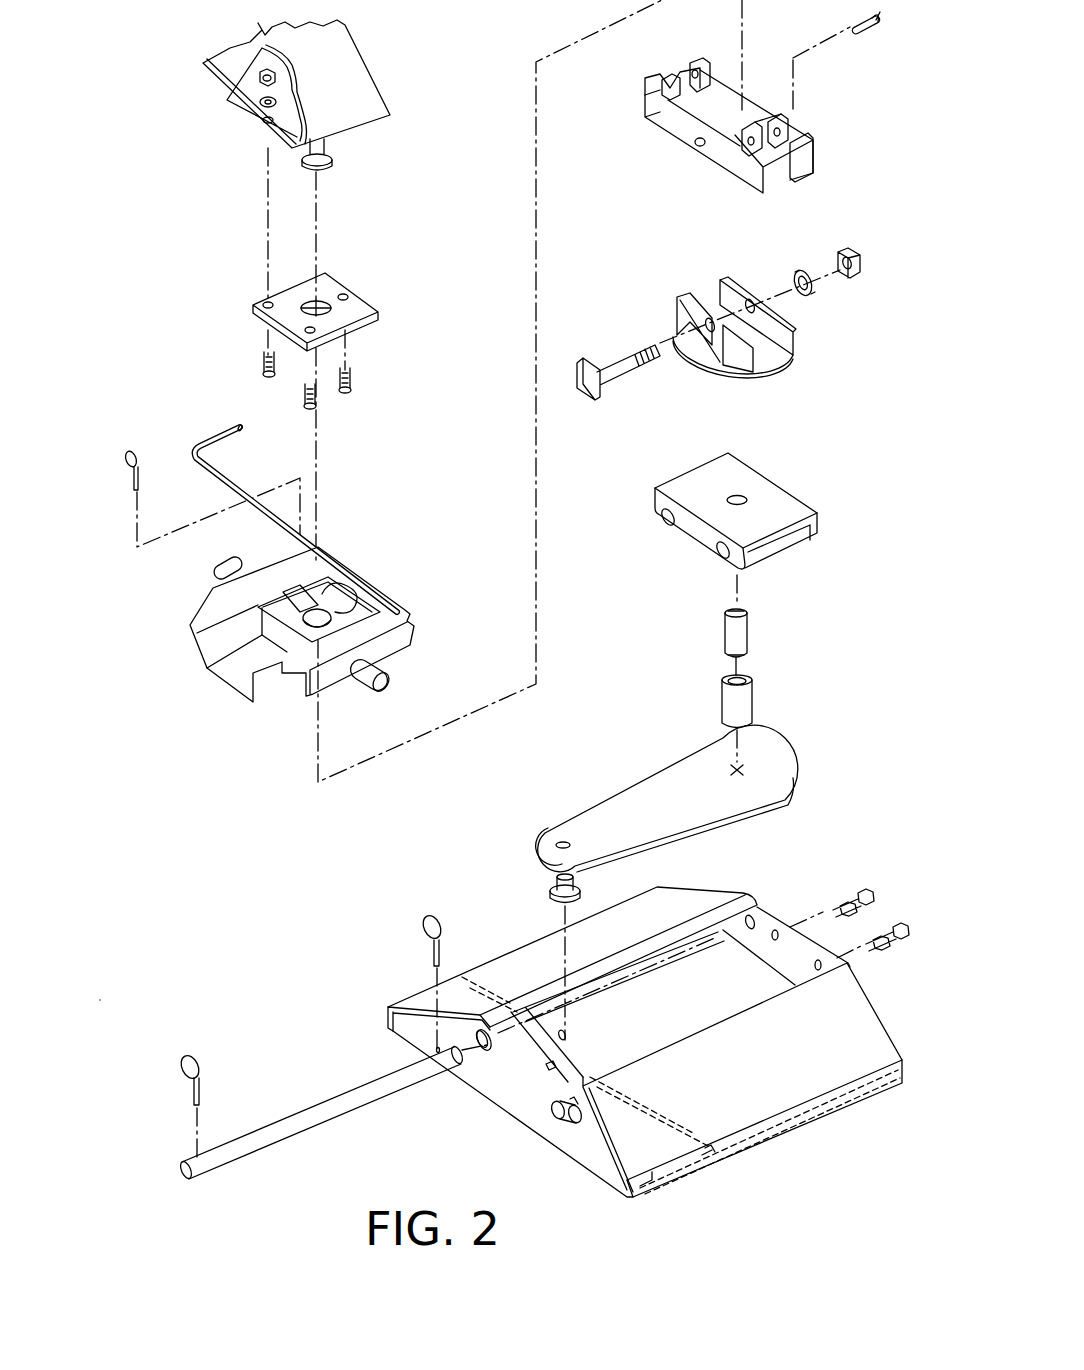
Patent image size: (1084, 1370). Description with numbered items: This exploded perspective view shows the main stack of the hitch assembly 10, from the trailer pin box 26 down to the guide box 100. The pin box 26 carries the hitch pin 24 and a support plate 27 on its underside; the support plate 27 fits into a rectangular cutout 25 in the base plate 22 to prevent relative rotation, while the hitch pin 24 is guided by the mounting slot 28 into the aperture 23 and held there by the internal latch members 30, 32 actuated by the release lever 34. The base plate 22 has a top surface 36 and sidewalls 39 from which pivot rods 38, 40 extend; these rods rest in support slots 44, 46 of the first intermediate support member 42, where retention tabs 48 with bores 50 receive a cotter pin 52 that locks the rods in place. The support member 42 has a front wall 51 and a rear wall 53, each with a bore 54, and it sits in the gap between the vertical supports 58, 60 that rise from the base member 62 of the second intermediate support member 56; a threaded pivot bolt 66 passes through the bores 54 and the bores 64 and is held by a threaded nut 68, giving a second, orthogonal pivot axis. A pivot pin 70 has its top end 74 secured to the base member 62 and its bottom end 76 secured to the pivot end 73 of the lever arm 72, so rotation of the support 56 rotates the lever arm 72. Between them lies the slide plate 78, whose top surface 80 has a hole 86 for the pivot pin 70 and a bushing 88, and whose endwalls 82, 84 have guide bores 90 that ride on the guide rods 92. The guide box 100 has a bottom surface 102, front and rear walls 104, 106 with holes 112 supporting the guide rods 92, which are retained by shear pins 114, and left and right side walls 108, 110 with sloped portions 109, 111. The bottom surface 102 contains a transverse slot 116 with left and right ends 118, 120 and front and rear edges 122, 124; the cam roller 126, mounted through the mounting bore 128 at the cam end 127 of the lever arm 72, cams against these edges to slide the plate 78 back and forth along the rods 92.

The hitch assembly 10 is at (186, 861).
The base plate 22 is at (301, 624).
The aperture 23 is at (318, 628).
The hitch pin 24 is at (333, 163).
The rectangular depression or cutout 25 is at (338, 583).
The pin box 26 is at (371, 71).
The support plate 27 is at (363, 298).
The mounting slot 28 is at (232, 671).
The internal latch member 30 is at (348, 600).
The internal latch member 32 is at (305, 605).
The release lever 34 is at (212, 432).
The top surface 36 is at (210, 613).
The pivot rod 38 is at (381, 688).
The sidewalls 39 is at (411, 643).
The pivot rod 40 is at (216, 572).
The first intermediate support member 42 is at (756, 110).
The support slot 44 is at (762, 116).
The support slot 46 is at (693, 108).
The retention tabs 48 is at (667, 75).
The bore 50 is at (674, 74).
The front wall 51 is at (814, 160).
The cotter pin 52 is at (870, 33).
The rear wall 53 is at (724, 165).
The bore 54 is at (698, 147).
The second intermediate support member 56 is at (766, 321).
The vertical support 58 is at (686, 297).
The vertical support 60 is at (722, 282).
The base member 62 is at (768, 372).
The bore 64 is at (753, 302).
The threaded pivot bolt 66 is at (616, 357).
The threaded nut 68 is at (859, 255).
The pivot pin 70 is at (742, 632).
The lever arm 72 is at (673, 784).
The pivot end 73 is at (789, 741).
The top end 74 is at (742, 611).
The bottom end 76 is at (727, 656).
The slide plate 78 is at (730, 513).
The top surface 80 is at (781, 498).
The endwall 82 is at (655, 500).
The endwall 84 is at (818, 535).
The hole 86 is at (741, 496).
The bushing 88 is at (753, 700).
The guide bores 90 is at (722, 560).
The guide rods 92 is at (241, 1160).
The guide box 100 is at (616, 1048).
The bottom surface 102 is at (704, 985).
The front wall 104 is at (777, 920).
The rear wall 106 is at (571, 1150).
The left side wall 108 is at (386, 1021).
The sloped portion 109 is at (668, 898).
The right side wall 110 is at (649, 1186).
The sloped portion 111 is at (862, 1004).
The holes 112 is at (478, 1053).
The shear pin 114 is at (205, 1093).
The transverse slot 116 is at (578, 1057).
The left end 118 is at (459, 973).
The right end 120 is at (716, 1166).
The front edge 122 is at (563, 1032).
The rear edge 124 is at (552, 1062).
The cam roller 126 is at (549, 888).
The cam end 127 is at (548, 836).
The mounting bore 128 is at (566, 841).